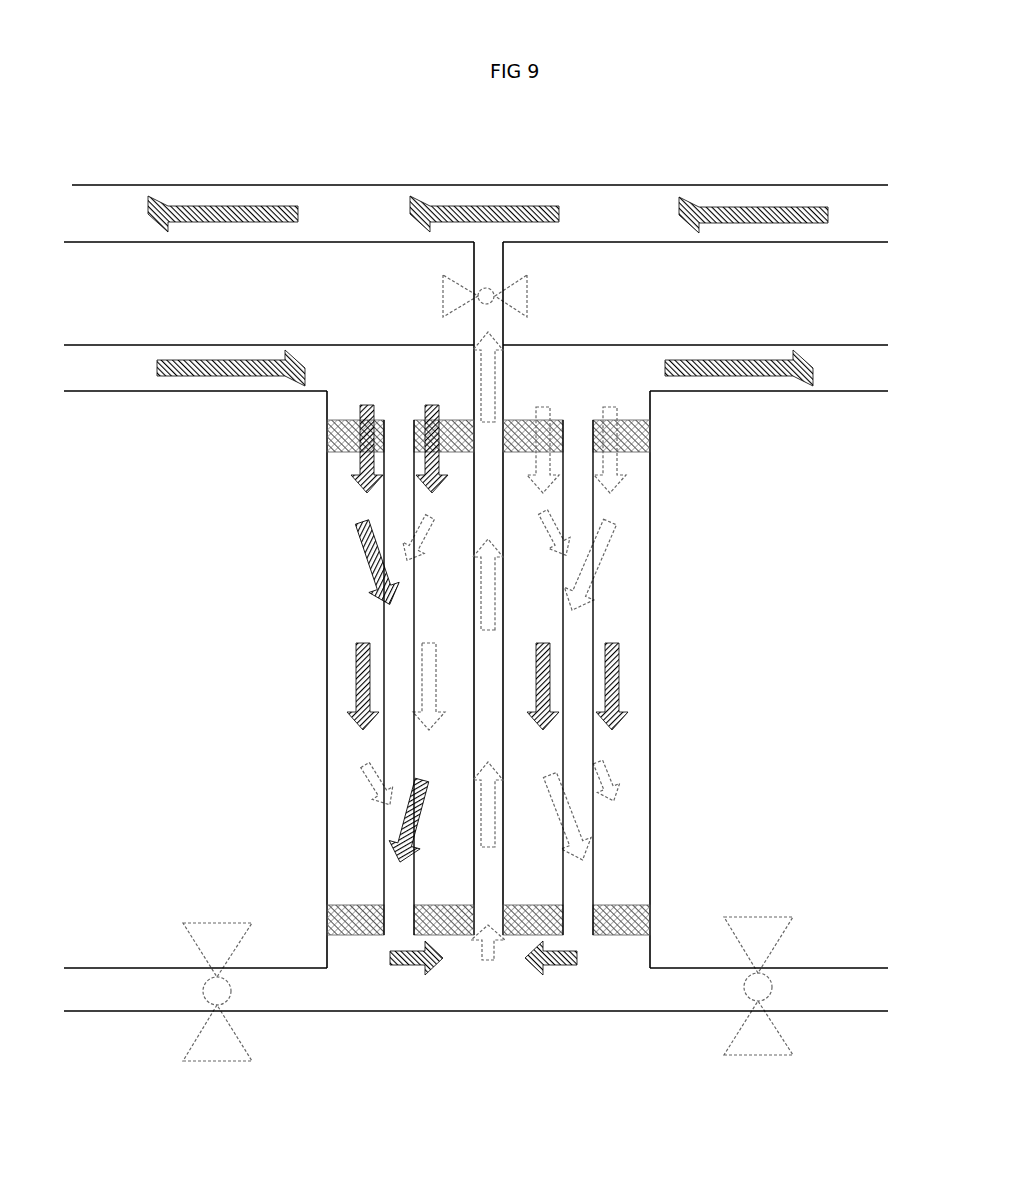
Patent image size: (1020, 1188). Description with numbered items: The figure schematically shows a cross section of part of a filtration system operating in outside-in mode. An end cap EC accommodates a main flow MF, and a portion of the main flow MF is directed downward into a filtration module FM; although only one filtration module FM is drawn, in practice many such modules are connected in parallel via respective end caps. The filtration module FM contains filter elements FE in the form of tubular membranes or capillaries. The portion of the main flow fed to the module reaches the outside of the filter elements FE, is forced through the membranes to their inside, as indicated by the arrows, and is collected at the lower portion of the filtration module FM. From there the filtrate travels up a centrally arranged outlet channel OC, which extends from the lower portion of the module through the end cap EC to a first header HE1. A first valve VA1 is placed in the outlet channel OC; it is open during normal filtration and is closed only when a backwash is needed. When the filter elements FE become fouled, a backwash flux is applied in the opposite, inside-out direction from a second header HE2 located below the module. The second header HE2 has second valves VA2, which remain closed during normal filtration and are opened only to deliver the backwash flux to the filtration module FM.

The first header HE1 is at (653, 178).
The second header HE2 is at (115, 1016).
The end cap EC is at (690, 347).
The main flow MF is at (204, 367).
The outlet channel OC is at (473, 261).
The first valve VA1 is at (516, 290).
The second valves VA2 is at (224, 926).
The filtration module FM is at (653, 617).
The filter elements FE is at (590, 507).